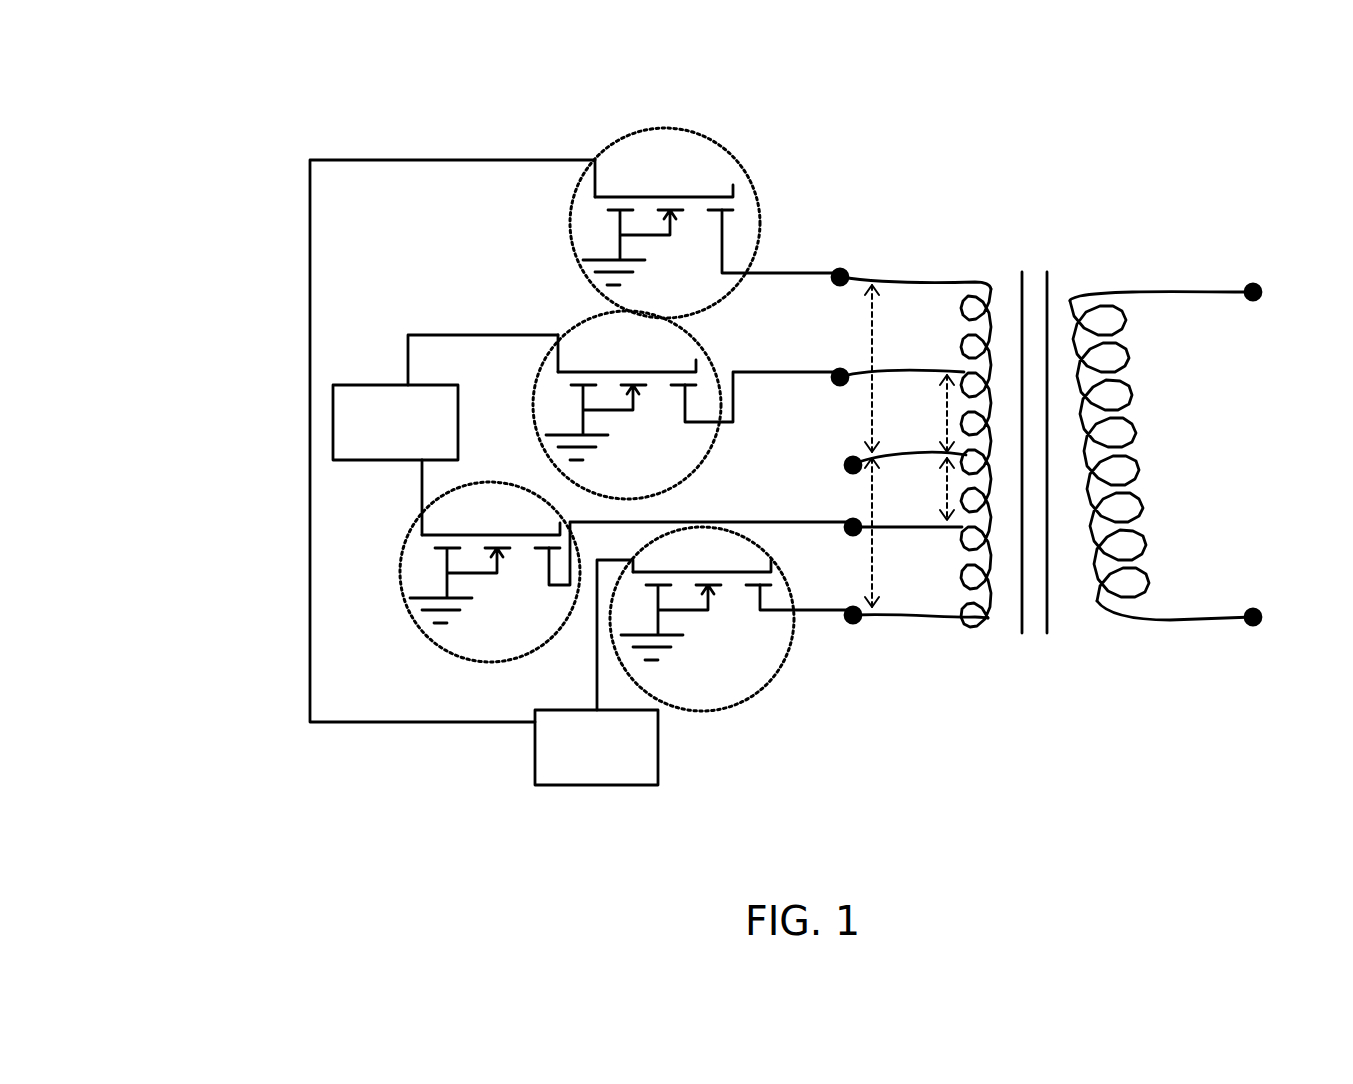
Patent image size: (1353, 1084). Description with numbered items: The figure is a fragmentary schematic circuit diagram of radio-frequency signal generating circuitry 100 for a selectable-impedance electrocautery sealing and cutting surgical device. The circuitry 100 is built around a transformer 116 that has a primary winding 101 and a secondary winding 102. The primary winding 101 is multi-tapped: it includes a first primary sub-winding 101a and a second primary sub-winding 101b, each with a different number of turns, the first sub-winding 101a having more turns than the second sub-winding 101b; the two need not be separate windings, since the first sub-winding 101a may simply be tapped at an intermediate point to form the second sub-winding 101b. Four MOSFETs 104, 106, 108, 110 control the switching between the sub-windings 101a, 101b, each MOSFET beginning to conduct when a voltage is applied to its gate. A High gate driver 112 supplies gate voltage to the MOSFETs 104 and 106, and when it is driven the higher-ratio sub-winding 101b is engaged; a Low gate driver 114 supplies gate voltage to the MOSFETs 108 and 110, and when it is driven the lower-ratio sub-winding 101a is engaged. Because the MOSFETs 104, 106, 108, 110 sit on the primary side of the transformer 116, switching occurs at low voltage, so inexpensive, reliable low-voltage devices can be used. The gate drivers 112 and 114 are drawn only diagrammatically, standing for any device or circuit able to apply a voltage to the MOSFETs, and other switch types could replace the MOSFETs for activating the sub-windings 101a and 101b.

The radio-frequency signal generating circuitry 100 is at (262, 189).
The primary winding 101 is at (978, 278).
The first primary sub-winding 101a is at (837, 446).
The second primary sub-winding 101b is at (917, 447).
The secondary winding 102 is at (1100, 272).
The MOSFET 104 is at (594, 326).
The MOSFET 106 is at (493, 642).
The MOSFET 108 is at (575, 213).
The MOSFET 110 is at (768, 652).
The High gate driver 112 is at (445, 435).
The Low gate driver 114 is at (596, 672).
The transformer 116 is at (1033, 680).